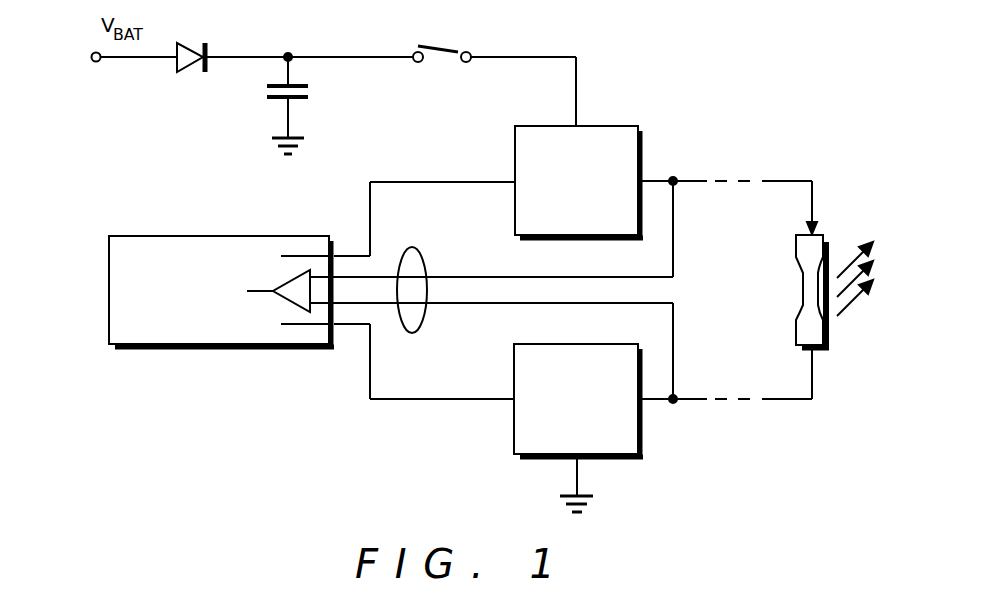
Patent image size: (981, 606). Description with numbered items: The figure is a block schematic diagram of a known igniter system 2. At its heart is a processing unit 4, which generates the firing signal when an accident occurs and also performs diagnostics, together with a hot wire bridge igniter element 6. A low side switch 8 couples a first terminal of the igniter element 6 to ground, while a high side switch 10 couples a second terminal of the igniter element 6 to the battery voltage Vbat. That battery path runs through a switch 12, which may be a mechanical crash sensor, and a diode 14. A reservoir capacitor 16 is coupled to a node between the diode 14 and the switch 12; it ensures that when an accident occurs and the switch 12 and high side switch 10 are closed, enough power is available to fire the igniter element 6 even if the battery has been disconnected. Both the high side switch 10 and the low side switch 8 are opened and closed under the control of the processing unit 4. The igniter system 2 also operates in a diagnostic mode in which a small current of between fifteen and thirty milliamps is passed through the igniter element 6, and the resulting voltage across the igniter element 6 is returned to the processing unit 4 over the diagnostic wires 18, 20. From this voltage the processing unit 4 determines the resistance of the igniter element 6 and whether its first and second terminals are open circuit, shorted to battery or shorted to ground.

The igniter system 2 is at (244, 400).
The processing unit 4 is at (288, 236).
The hot wire bridge igniter element 6 is at (827, 333).
The low side switch 8 is at (597, 344).
The high side switch 10 is at (618, 127).
The switch 12 is at (470, 52).
The diode 14 is at (203, 45).
The reservoir capacitor 16 is at (265, 86).
The diagnostic wire 18 is at (673, 340).
The diagnostic wire 20 is at (673, 257).